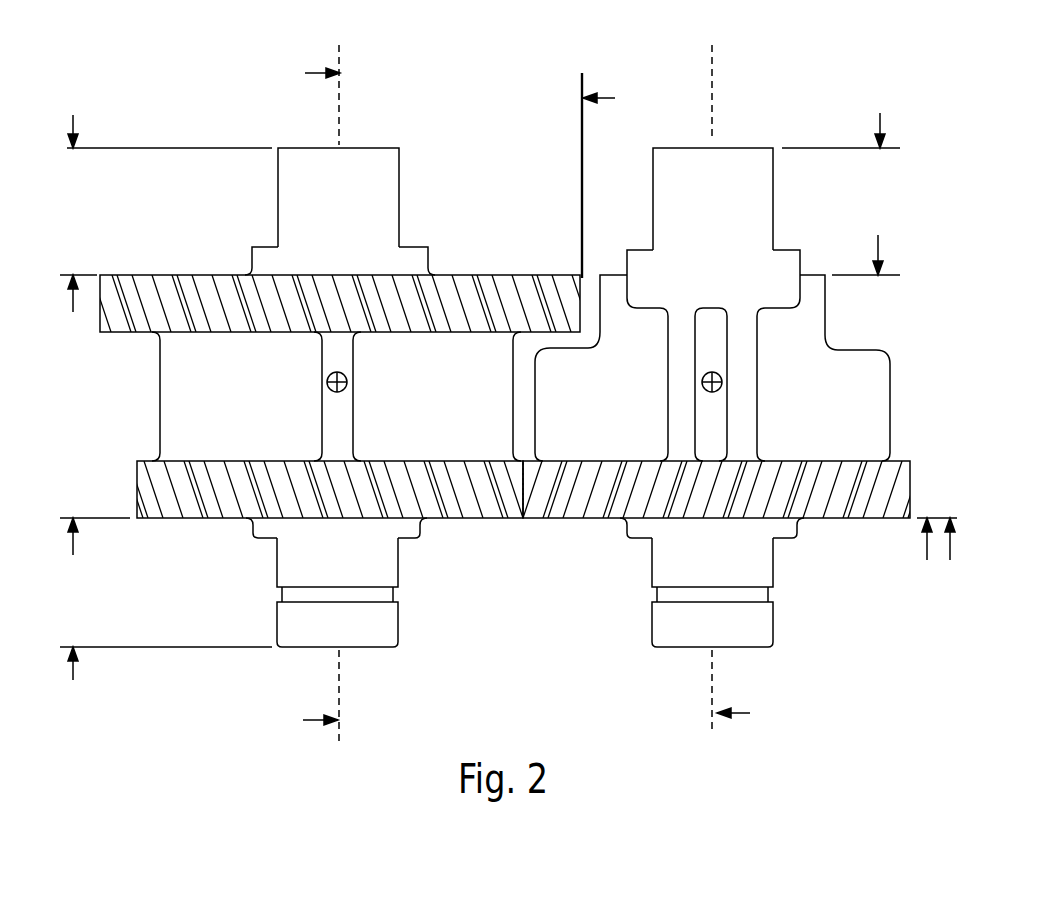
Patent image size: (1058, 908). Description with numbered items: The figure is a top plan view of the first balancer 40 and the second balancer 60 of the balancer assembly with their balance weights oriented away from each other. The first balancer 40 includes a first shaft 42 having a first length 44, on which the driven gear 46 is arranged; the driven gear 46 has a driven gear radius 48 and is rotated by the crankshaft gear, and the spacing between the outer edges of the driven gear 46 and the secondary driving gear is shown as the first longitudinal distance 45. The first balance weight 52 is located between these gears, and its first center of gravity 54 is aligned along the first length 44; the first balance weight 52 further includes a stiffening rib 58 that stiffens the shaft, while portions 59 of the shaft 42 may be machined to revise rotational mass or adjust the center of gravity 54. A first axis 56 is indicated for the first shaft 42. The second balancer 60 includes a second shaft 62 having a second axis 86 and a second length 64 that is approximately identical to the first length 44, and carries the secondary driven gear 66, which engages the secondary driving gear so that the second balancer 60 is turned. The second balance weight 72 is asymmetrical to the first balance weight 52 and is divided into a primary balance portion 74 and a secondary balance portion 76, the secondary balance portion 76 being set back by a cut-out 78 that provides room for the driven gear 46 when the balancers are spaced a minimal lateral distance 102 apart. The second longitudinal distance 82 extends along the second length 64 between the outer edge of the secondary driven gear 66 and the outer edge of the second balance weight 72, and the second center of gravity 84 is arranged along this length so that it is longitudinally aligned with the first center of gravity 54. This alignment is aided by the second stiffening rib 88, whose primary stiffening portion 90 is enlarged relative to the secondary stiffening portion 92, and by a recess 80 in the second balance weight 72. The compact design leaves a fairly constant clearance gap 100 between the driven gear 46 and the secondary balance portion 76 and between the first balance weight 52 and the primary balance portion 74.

The first balancer 40 is at (175, 398).
The first shaft 42 is at (387, 623).
The first length 44 is at (73, 122).
The first longitudinal distance 45 is at (73, 310).
The driven gear 46 is at (161, 292).
The driven gear radius 48 is at (612, 98).
The first balance weight 52 is at (177, 371).
The first center of gravity 54 is at (347, 378).
The first axis 56 is at (337, 692).
The stiffening rib 58 is at (343, 438).
The portions of the shaft 59 is at (413, 260).
The second balancer 60 is at (870, 388).
The second shaft 62 is at (760, 620).
The second length 64 is at (880, 113).
The secondary driven gear 66 is at (862, 518).
The second balance weight 72 is at (812, 323).
The primary balance portion 74 is at (862, 364).
The secondary balance portion 76 is at (812, 290).
The set back or cut-out 78 is at (530, 283).
The recess 80 is at (752, 423).
The second longitudinal distance 82 is at (878, 237).
The second center of gravity 84 is at (702, 390).
The second axis 86 is at (712, 688).
The second stiffening rib 88 is at (703, 427).
The primary stiffening portion 90 is at (720, 268).
The secondary stiffening portion 92 is at (700, 337).
The clearance gap 100 is at (590, 300).
The lateral distance 102 is at (307, 723).